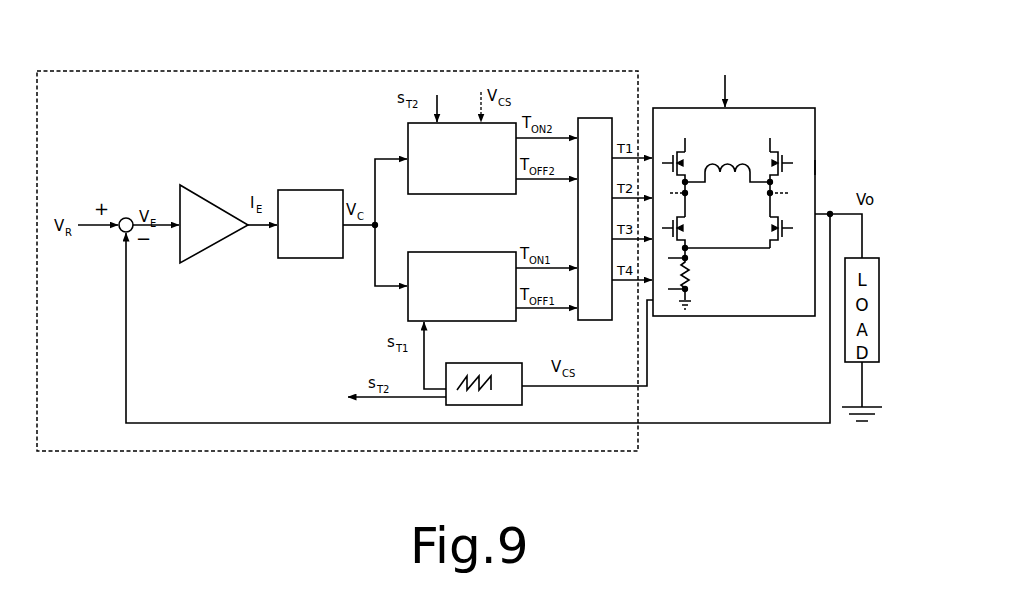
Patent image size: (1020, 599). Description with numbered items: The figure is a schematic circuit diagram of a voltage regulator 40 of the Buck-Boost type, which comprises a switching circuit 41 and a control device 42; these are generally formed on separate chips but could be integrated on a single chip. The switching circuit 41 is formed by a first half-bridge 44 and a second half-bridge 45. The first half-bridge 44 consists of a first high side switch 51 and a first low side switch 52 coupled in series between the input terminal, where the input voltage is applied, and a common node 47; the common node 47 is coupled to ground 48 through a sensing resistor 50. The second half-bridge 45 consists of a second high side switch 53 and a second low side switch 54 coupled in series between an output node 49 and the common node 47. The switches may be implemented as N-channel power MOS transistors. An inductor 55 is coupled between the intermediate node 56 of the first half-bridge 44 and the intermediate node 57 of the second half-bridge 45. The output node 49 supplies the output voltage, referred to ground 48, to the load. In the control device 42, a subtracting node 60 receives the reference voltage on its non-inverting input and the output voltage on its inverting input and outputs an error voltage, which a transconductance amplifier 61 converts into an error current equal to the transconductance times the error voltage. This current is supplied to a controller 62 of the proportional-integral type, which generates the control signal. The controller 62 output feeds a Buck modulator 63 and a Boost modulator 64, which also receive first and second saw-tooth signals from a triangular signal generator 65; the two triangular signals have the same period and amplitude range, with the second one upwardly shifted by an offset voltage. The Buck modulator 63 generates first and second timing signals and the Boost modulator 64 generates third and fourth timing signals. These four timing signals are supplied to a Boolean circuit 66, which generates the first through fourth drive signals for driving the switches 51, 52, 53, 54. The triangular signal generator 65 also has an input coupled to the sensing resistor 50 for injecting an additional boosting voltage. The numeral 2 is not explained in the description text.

The power converter 2 is at (815, 167).
The voltage regulator 40 is at (833, 66).
The switching circuit 41 is at (707, 318).
The control device 42 is at (48, 78).
The first half-bridge 44 is at (689, 118).
The second half-bridge 45 is at (765, 118).
The common node 47 is at (690, 250).
The reference potential line (ground) 48 is at (728, 96).
The output node 49 is at (775, 148).
The sensing resistor 50 is at (690, 282).
The first high side switch 51 is at (682, 152).
The first low side switch 52 is at (690, 227).
The second high side switch 53 is at (778, 162).
The second low side switch 54 is at (778, 240).
The inductor 55 is at (725, 160).
The intermediate node of the first half-bridge 56 is at (688, 193).
The intermediate node of the second half-bridge 57 is at (790, 191).
The subtracting node 60 is at (124, 218).
The transconductance amplifier 61 is at (192, 183).
The controller 62 is at (286, 190).
The Buck modulator 63 is at (403, 262).
The Boost modulator 64 is at (475, 195).
The triangular signal generator 65 is at (522, 402).
The Boolean circuit 66 is at (590, 118).